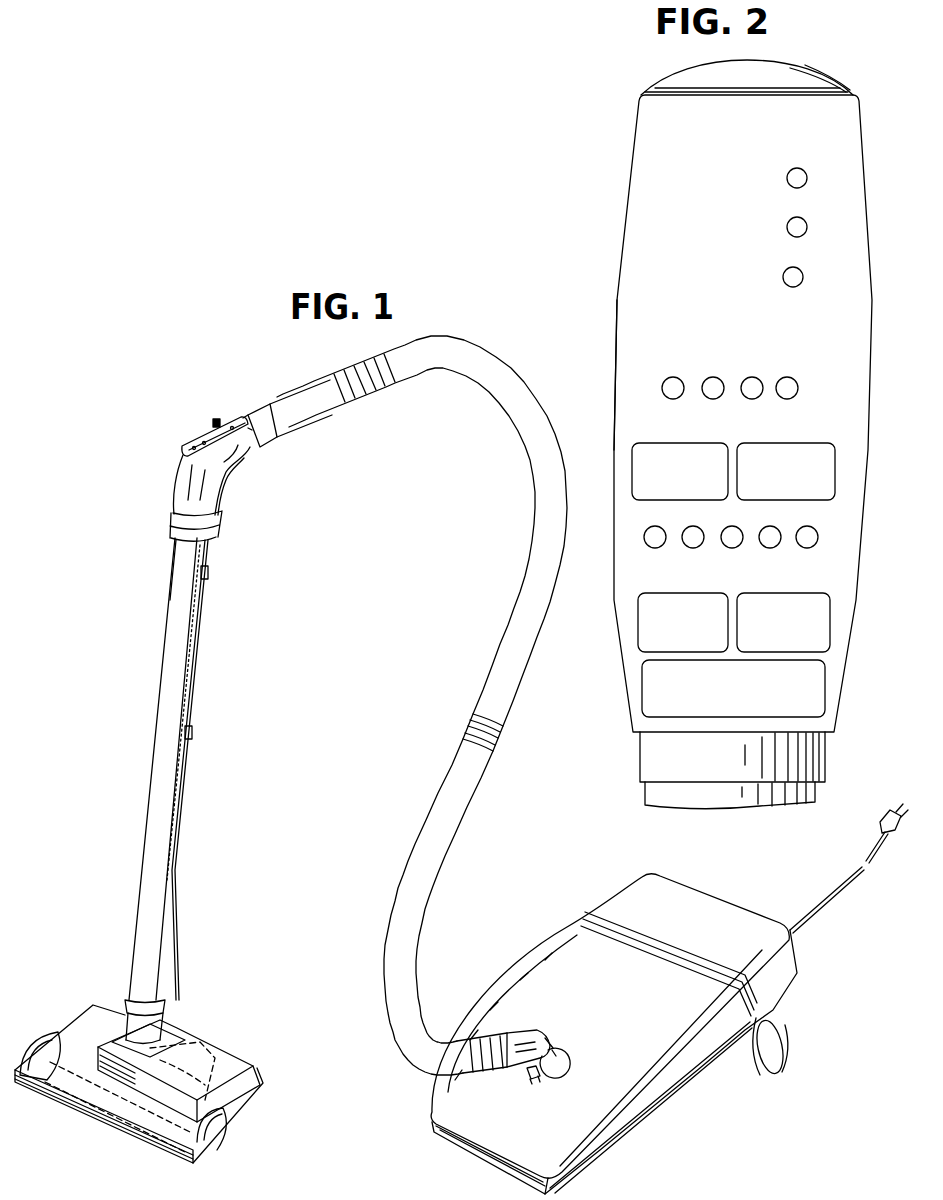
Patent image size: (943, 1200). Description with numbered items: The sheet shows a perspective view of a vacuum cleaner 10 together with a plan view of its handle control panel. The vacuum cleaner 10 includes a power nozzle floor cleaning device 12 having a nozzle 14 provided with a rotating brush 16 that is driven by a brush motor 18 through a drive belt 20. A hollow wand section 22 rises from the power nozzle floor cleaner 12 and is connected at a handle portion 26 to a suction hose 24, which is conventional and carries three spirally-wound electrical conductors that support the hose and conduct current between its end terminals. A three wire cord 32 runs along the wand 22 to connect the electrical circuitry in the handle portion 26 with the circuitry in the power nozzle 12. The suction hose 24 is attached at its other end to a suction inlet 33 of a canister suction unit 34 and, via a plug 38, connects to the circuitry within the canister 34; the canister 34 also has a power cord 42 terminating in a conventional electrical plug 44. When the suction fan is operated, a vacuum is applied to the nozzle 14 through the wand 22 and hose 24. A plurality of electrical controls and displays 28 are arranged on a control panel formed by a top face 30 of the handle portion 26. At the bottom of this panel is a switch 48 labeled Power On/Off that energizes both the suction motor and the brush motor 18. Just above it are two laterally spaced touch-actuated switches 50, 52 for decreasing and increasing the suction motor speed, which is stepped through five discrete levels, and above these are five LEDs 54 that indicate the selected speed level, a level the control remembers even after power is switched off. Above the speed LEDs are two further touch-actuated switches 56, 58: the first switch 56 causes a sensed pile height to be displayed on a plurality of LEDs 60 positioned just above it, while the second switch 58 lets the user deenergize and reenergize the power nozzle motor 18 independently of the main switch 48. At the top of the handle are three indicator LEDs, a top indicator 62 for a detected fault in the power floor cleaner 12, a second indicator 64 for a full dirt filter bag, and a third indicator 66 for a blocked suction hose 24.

In FIG. 1, the vacuum cleaner 10 is at (162, 587).
In FIG. 1, the power nozzle floor cleaning device 12 is at (90, 1013).
In FIG. 1, the nozzle 14 is at (48, 1083).
In FIG. 1, the rotating brush 16 is at (46, 1045).
In FIG. 1, the brush motor 18 is at (208, 1048).
In FIG. 1, the drive belt 20 is at (226, 1128).
In FIG. 1, the hollow wand section 22 is at (160, 790).
In FIG. 1, the suction hose 24 is at (402, 377).
In FIG. 1, the handle portion 26 is at (228, 472).
In FIG. 2, the handle portion 26 is at (618, 238).
In FIG. 1, the electrical controls and displays 28 is at (217, 419).
In FIG. 2, the electrical controls and displays 28 is at (648, 207).
In FIG. 1, the top face 30 is at (190, 443).
In FIG. 2, the top face 30 is at (848, 145).
In FIG. 1, the three wire cord 32 is at (194, 688).
In FIG. 1, the suction inlet 33 is at (558, 1050).
In FIG. 1, the canister suction unit 34 is at (565, 943).
In FIG. 1, the plug 38 is at (531, 1085).
In FIG. 1, the power cord 42 is at (829, 903).
In FIG. 1, the electrical plug 44 is at (890, 837).
In FIG. 2, the power on/off switch 48 is at (812, 706).
In FIG. 2, the decrease speed switch 50 is at (643, 600).
In FIG. 2, the increase speed switch 52 is at (823, 601).
In FIG. 2, the speed indicating LEDs 54 is at (806, 530).
In FIG. 2, the pile height switch 56 is at (640, 451).
In FIG. 2, the power nozzle on/off switch 58 is at (825, 450).
In FIG. 2, the pile height LEDs 60 is at (786, 380).
In FIG. 2, the top indicator 62 is at (805, 184).
In FIG. 2, the second indicator 64 is at (805, 233).
In FIG. 2, the third indicator 66 is at (801, 283).